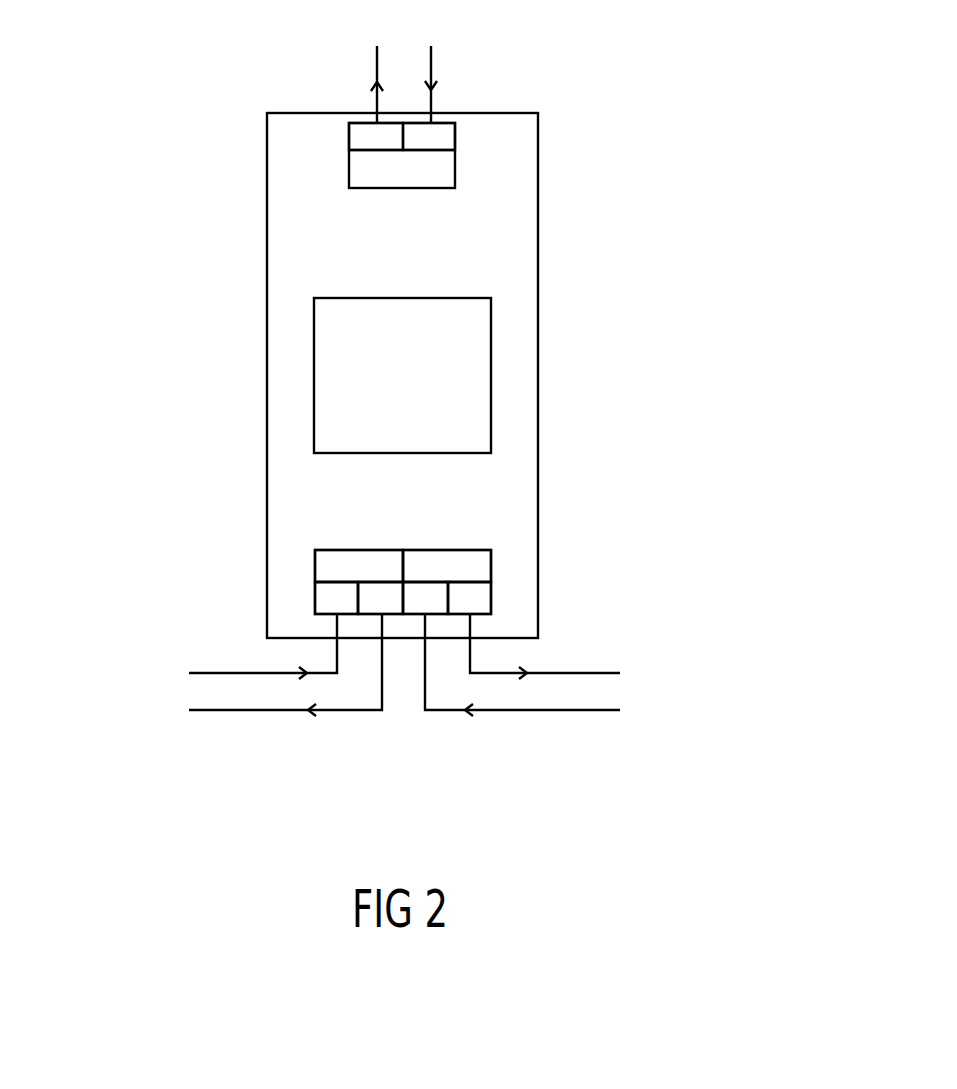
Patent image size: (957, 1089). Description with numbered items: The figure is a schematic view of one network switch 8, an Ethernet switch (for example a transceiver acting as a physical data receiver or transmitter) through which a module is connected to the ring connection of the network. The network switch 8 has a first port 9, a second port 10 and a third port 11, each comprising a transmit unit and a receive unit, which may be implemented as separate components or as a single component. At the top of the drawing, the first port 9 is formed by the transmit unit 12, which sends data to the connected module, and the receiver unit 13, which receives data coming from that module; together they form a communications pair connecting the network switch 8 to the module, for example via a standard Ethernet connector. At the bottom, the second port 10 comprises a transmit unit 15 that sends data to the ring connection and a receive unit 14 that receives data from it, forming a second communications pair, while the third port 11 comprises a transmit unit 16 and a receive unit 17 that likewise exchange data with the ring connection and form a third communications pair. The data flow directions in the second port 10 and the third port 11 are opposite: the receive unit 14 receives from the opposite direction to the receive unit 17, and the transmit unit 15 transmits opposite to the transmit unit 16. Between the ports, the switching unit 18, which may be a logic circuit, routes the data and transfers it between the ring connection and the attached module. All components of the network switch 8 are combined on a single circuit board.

The network switch 8 is at (538, 236).
The first port 9 is at (403, 167).
The second port 10 is at (347, 563).
The third port 11 is at (462, 563).
The transmit unit 12 is at (362, 137).
The receiver unit 13 is at (440, 137).
The receive unit 14 is at (327, 597).
The transmit unit 15 is at (383, 600).
The transmit unit 16 is at (480, 598).
The receive unit 17 is at (425, 595).
The switching unit 18 is at (491, 371).